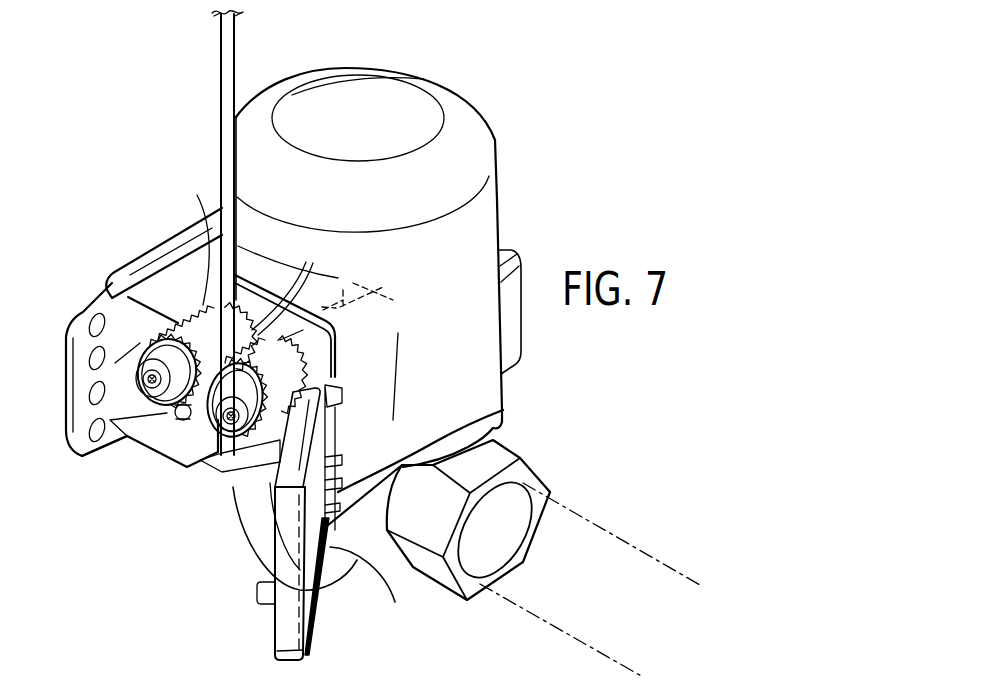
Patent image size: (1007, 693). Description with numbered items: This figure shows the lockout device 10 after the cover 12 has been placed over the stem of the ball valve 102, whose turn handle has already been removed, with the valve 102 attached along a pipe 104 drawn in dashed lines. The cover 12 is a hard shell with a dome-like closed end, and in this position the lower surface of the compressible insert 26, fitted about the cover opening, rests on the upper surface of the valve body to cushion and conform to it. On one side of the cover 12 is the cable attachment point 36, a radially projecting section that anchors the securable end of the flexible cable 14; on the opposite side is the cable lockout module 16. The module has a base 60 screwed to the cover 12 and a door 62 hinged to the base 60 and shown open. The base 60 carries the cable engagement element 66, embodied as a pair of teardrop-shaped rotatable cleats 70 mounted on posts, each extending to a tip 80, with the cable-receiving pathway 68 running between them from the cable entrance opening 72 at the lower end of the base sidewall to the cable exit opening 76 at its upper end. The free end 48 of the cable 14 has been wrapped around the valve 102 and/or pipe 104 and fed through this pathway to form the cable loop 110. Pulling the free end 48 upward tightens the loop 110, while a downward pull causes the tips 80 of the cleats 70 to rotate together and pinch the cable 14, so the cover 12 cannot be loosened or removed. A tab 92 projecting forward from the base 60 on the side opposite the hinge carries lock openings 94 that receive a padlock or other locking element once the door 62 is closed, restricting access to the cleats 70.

The lockout device 10 is at (503, 108).
The cover 12 is at (468, 230).
The cable 14 is at (230, 53).
The cable lockout module 16 is at (147, 468).
The insert 26 is at (504, 422).
The cable attachment point 36 is at (514, 325).
The free end 48 is at (220, 14).
The base 60 is at (148, 262).
The door 62 is at (282, 662).
The cable engagement element 66 is at (165, 430).
The cable-receiving pathway 68 is at (203, 412).
The rotatable cleats 70 is at (311, 264).
The cable entrance opening 72 is at (220, 465).
The cable exit opening 76 is at (255, 300).
The tip 80 is at (187, 307).
The tab 92 is at (65, 393).
The lock openings 94 is at (68, 437).
The ball valve 102 is at (385, 500).
The pipe 104 is at (606, 527).
The cable loop 110 is at (343, 567).